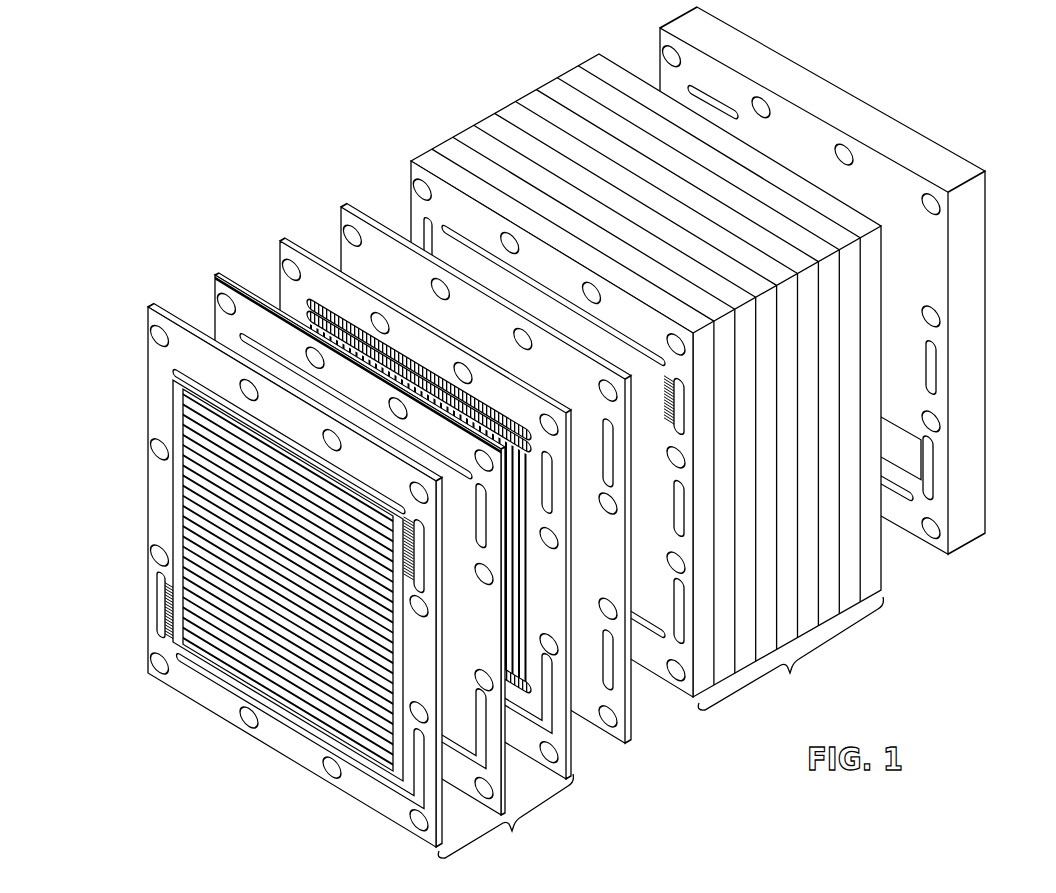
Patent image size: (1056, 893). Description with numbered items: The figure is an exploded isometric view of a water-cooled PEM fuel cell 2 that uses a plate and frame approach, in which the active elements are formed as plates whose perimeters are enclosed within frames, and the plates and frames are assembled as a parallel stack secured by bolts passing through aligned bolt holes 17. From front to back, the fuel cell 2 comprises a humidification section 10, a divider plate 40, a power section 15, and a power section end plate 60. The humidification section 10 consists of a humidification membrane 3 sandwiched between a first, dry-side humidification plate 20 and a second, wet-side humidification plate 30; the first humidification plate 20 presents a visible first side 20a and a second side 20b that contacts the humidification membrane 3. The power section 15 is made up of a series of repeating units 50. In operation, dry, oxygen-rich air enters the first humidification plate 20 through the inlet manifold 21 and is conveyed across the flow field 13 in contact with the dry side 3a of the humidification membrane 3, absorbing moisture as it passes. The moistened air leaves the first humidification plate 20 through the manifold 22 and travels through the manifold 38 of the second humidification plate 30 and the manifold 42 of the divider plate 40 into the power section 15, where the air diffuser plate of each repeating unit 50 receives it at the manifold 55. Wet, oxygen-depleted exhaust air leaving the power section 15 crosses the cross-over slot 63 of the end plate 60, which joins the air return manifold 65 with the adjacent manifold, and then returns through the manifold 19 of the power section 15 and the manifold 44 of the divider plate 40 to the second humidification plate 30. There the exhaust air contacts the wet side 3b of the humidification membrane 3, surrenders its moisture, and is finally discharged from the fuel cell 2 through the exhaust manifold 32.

The fuel cell 2 is at (535, 429).
The humidification membrane 3 is at (342, 508).
The first (dry) side of humidification membrane 3a is at (250, 318).
The second (wet) side of humidification membrane 3b is at (259, 296).
The humidification section 10 is at (316, 503).
The flow field 13 is at (205, 498).
The power section 15 is at (617, 382).
The bolt holes 17 is at (152, 441).
The manifold 19 is at (682, 610).
The first (dry-side) humidification plate 20 is at (253, 556).
The first (visible) side of first humidification plate 20a is at (168, 353).
The second side of first humidification plate 20b is at (190, 318).
The inlet manifold 21 is at (150, 598).
The manifold 22 is at (428, 572).
The second (wet-side) humidification plate 30 is at (404, 465).
The exhaust manifold 32 is at (150, 382).
The manifold 38 is at (558, 492).
The divider plate 40 is at (485, 457).
The manifold 42 is at (600, 443).
The manifold 44 is at (605, 670).
The repeating unit 50 is at (615, 375).
The manifold 55 is at (673, 423).
The power section end plate 60 is at (798, 287).
The cross-over slot 63 is at (905, 428).
The air return manifold 65 is at (928, 465).